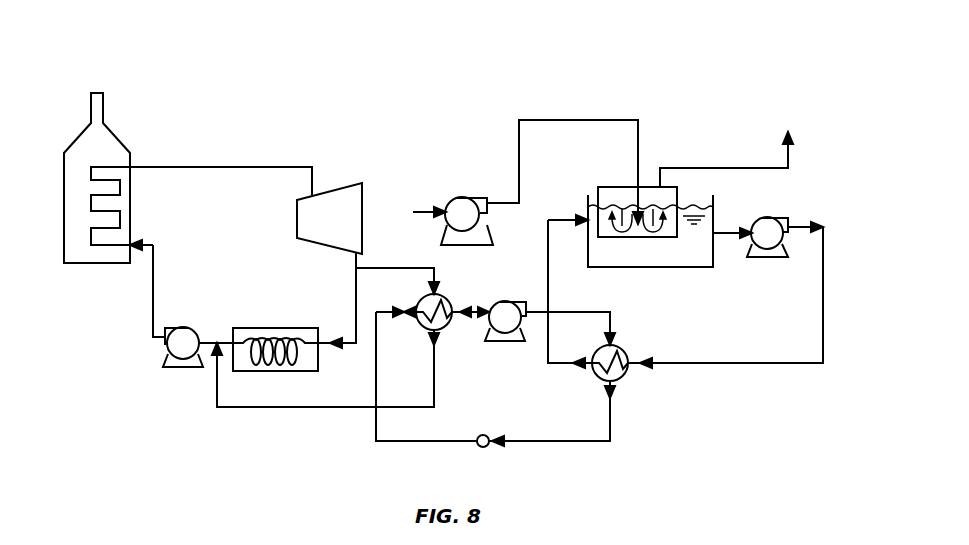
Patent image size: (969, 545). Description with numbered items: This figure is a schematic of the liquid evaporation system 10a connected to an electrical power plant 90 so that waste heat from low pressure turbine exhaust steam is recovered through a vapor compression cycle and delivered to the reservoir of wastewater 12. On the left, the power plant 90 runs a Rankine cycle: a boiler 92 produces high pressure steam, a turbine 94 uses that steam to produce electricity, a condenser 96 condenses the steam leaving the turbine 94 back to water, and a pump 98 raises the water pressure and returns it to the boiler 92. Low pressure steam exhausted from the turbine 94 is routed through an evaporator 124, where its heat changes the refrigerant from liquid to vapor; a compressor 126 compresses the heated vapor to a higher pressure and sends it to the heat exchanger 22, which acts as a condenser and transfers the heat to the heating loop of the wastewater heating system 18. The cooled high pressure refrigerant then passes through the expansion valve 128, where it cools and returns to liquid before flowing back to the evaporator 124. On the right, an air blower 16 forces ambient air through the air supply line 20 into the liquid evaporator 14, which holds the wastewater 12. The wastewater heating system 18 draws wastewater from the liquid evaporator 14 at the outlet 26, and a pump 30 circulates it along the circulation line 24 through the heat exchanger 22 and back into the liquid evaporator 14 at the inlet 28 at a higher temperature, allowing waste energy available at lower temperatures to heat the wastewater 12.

The liquid evaporation system 10a is at (728, 92).
The wastewater 12 is at (679, 262).
The liquid evaporator 14 is at (677, 195).
The air blower 16 is at (458, 197).
The wastewater heating system 18 is at (826, 320).
The air supply line 20 is at (553, 120).
The heat exchanger 22 is at (623, 380).
The circulation line 24 is at (774, 367).
The outlet 26 is at (713, 228).
The inlet 28 is at (581, 213).
The pump 30 is at (780, 218).
The electrical power plant 90 is at (106, 356).
The boiler 92 is at (118, 140).
The turbine 94 is at (347, 182).
The condenser 96 is at (253, 328).
The pump 98 is at (172, 328).
The evaporator 124 is at (448, 298).
The compressor 126 is at (510, 300).
The expansion valve 128 is at (484, 432).